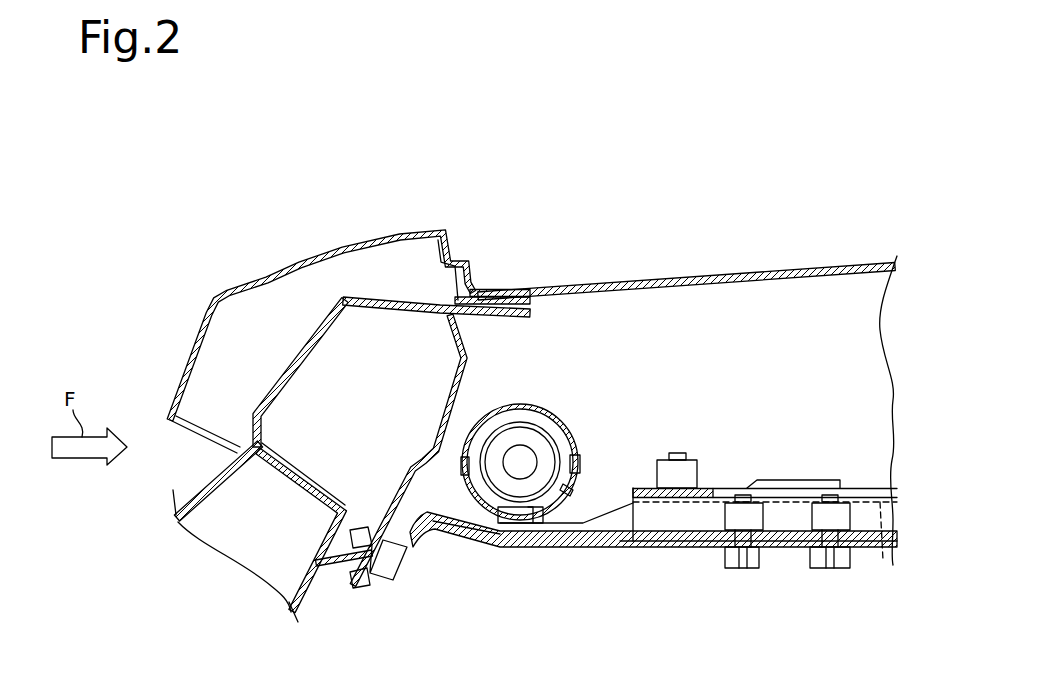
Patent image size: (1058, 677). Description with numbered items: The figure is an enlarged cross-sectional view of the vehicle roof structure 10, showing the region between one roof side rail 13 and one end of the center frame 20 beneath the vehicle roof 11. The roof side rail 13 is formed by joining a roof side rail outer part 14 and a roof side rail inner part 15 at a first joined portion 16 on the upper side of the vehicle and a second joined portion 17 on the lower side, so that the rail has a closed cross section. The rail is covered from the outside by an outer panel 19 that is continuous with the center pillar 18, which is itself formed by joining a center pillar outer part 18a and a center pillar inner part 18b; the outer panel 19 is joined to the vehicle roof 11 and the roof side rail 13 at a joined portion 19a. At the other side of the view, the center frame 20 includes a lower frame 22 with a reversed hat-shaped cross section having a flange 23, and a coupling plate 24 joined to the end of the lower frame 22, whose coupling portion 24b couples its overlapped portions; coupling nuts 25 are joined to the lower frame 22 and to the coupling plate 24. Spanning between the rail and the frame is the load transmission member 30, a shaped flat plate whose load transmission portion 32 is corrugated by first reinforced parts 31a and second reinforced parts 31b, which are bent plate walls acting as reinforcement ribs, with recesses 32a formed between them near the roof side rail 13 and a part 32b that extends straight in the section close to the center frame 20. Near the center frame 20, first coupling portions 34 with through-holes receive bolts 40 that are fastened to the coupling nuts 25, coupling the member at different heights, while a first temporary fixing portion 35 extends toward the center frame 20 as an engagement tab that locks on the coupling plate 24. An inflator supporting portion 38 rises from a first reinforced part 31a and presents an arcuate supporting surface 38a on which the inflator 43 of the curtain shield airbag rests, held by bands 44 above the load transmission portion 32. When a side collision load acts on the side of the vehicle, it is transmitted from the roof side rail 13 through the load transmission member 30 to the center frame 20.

The vehicle roof structure 10 is at (216, 160).
The vehicle roof 11 is at (665, 280).
The roof side rail 13 is at (438, 193).
The roof side rail outer part 14 is at (351, 299).
The roof side rail inner part 15 is at (452, 336).
The first joined portion 16 is at (508, 318).
The second joined portion 17 is at (316, 568).
The center pillar 18 is at (195, 531).
The center pillar outer part 18a is at (177, 519).
The center pillar inner part 18b is at (290, 592).
The outer panel 19 is at (206, 303).
The joined portion 19a is at (473, 290).
The center frame 20 is at (895, 470).
The lower frame 22 is at (630, 530).
The flange 23 is at (880, 543).
The coupling plate 24 is at (645, 487).
The coupling portion 24b is at (661, 466).
The coupling nut 25 is at (698, 467).
The load transmission member 30 is at (653, 558).
The first reinforced part 31a is at (612, 523).
The second reinforced part 31b is at (412, 510).
The load transmission portion 32 is at (655, 547).
The recess 32a is at (608, 548).
The straight part 32b is at (777, 560).
The first coupling portion 34 is at (735, 568).
The first temporary fixing portion 35 is at (803, 480).
The inflator supporting portion 38 is at (506, 524).
The supporting surface 38a is at (536, 524).
The bolt 40 is at (675, 452).
The inflator 43 is at (527, 422).
The band 44 is at (493, 418).